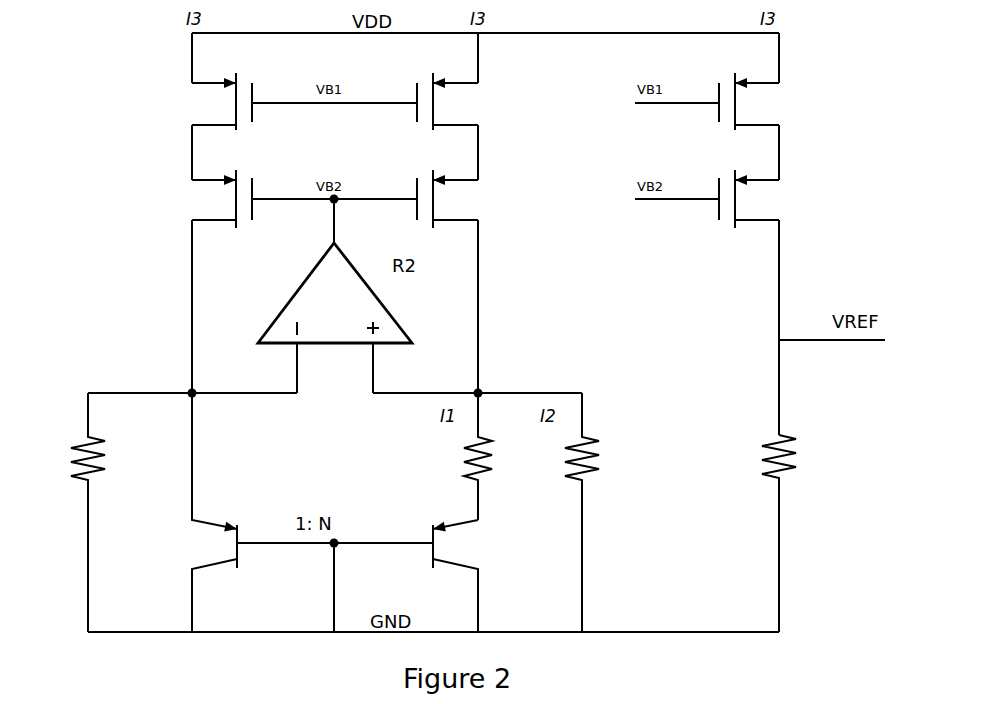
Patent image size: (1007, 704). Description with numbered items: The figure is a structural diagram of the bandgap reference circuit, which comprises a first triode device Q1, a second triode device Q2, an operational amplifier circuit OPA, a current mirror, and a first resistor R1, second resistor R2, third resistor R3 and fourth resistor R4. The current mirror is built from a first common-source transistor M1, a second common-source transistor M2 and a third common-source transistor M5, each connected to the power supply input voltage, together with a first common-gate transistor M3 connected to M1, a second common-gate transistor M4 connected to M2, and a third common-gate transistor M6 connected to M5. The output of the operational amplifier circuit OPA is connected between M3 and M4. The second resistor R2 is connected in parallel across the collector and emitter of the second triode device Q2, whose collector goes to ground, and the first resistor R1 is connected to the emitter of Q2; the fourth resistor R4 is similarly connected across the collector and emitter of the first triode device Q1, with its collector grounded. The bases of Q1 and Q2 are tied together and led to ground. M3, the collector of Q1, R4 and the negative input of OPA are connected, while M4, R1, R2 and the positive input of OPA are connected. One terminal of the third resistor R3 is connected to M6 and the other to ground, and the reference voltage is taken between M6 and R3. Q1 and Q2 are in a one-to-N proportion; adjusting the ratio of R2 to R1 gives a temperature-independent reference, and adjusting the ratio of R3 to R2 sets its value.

The first common-source transistor M1 is at (206, 101).
The second common-source transistor M2 is at (465, 101).
The first common-gate transistor M3 is at (206, 199).
The second common-gate transistor M4 is at (465, 199).
The third common-source transistor M5 is at (767, 101).
The third common-gate transistor M6 is at (767, 199).
The operational amplifier circuit OPA is at (335, 318).
The first resistor R1 is at (451, 456).
The second resistor R2 is at (604, 512).
The third resistor R3 is at (804, 533).
The fourth resistor R4 is at (71, 512).
The first triode device Q1 is at (189, 512).
The second triode device Q2 is at (479, 576).